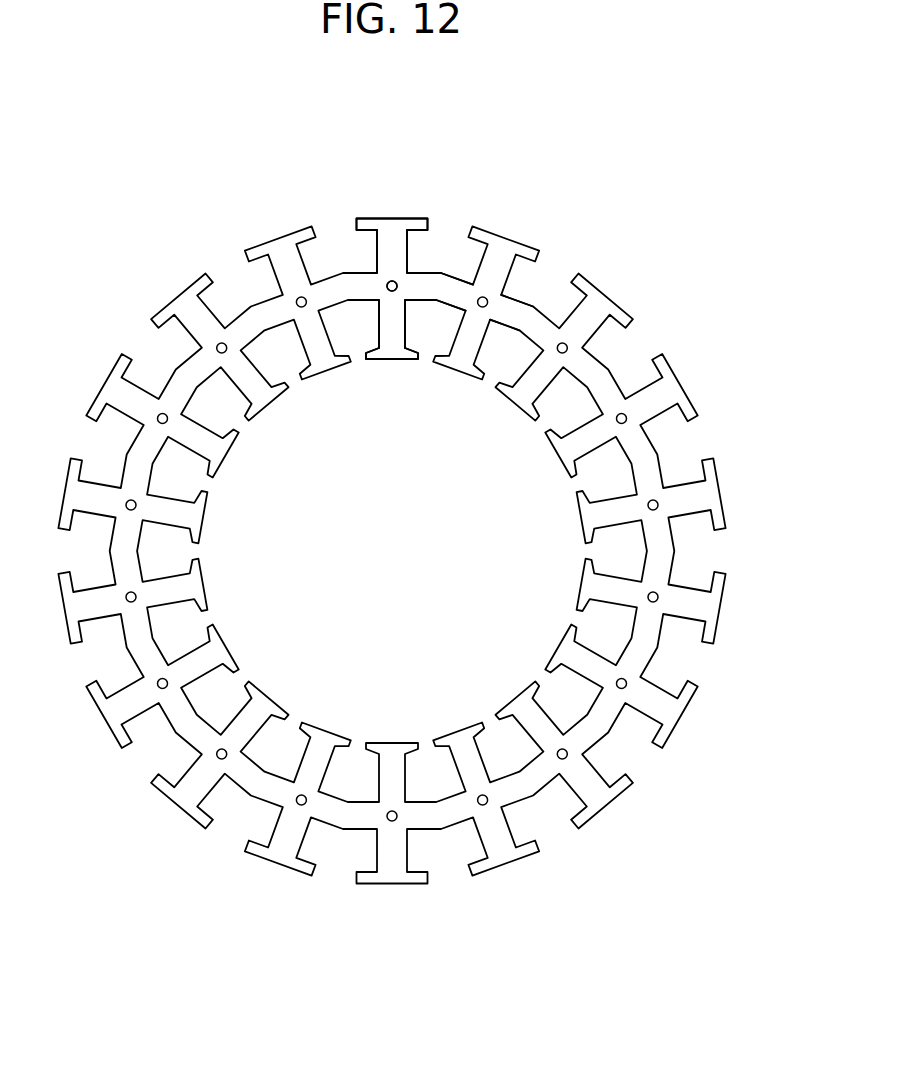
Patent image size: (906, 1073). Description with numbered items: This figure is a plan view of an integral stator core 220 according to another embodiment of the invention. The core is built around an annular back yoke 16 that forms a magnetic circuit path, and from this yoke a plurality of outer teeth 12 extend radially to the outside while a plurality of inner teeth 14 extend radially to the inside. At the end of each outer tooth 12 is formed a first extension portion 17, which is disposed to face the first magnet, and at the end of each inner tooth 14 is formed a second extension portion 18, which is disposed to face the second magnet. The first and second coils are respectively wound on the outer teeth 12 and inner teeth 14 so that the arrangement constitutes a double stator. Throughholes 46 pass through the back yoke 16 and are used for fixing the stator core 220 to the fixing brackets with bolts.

The integral stator core 220 is at (532, 215).
The outer tooth 12 is at (377, 249).
The inner tooth 14 is at (378, 325).
The annular back yoke 16 is at (523, 313).
The first extension portion 17 is at (390, 222).
The second extension portion 18 is at (396, 361).
The throughhole 46 is at (391, 281).